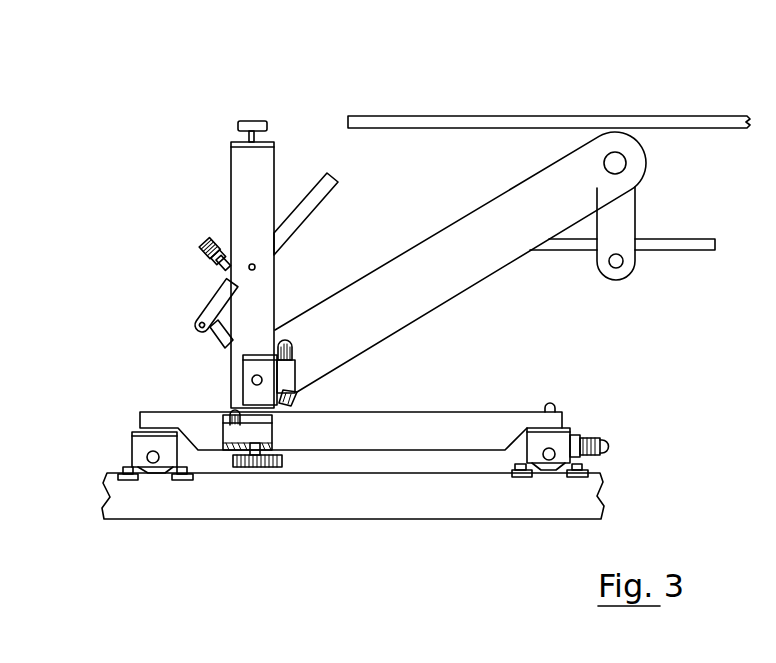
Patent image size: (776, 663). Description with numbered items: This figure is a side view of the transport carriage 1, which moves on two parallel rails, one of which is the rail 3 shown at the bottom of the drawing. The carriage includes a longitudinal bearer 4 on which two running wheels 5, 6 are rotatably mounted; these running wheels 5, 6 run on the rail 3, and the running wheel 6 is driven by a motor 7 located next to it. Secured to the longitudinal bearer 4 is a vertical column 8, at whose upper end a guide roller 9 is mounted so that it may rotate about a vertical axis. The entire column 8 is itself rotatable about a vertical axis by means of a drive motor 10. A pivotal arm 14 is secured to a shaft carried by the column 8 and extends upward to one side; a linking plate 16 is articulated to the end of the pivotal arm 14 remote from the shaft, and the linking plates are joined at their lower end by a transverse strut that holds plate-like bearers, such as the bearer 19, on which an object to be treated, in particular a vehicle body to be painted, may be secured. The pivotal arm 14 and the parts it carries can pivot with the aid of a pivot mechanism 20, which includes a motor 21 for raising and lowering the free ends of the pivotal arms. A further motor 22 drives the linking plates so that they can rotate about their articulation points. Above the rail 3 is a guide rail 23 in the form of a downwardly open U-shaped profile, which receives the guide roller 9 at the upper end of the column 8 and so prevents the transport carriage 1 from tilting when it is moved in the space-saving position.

The transport carriage 1 is at (95, 125).
The rail 3 is at (490, 505).
The longitudinal bearer 4 is at (457, 425).
The running wheel 5 is at (143, 443).
The running wheel 6 is at (568, 440).
The motor 7 is at (605, 445).
The vertical column 8 is at (250, 170).
The guide roller 9 is at (249, 120).
The drive motor 10 is at (230, 412).
The pivotal arm 14 is at (453, 268).
The linking plate 16 is at (628, 211).
The plate-like bearer 19 is at (669, 243).
The pivot mechanism 20 is at (208, 302).
The motor 21 is at (221, 252).
The further motor 22 is at (293, 352).
The guide rail 23 is at (617, 122).